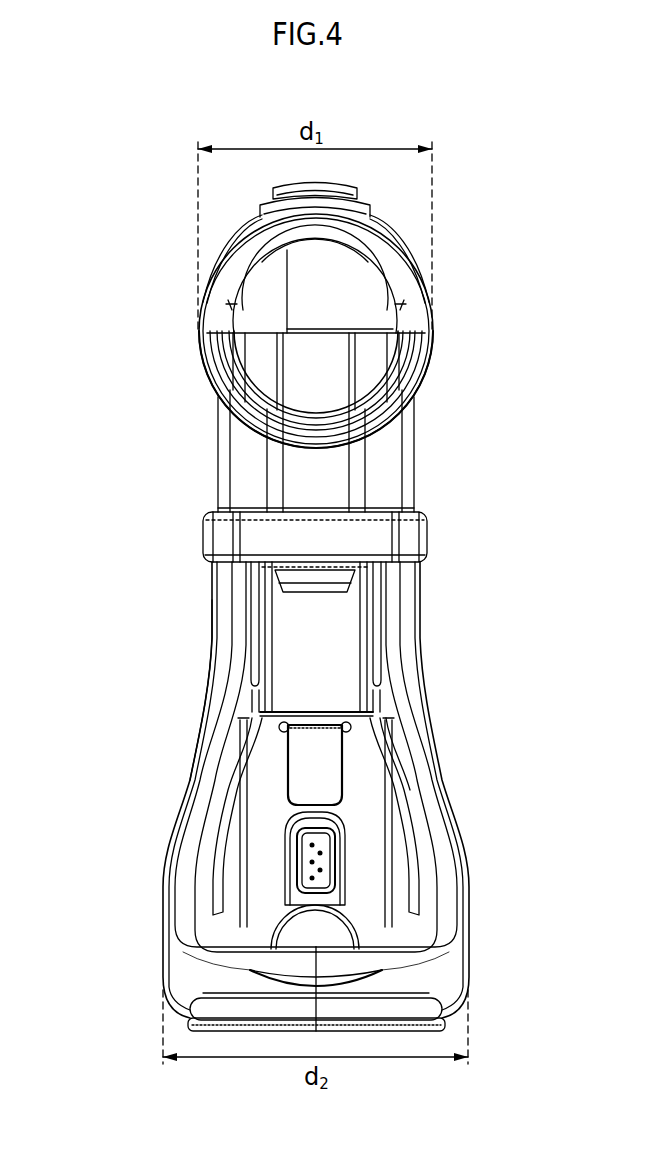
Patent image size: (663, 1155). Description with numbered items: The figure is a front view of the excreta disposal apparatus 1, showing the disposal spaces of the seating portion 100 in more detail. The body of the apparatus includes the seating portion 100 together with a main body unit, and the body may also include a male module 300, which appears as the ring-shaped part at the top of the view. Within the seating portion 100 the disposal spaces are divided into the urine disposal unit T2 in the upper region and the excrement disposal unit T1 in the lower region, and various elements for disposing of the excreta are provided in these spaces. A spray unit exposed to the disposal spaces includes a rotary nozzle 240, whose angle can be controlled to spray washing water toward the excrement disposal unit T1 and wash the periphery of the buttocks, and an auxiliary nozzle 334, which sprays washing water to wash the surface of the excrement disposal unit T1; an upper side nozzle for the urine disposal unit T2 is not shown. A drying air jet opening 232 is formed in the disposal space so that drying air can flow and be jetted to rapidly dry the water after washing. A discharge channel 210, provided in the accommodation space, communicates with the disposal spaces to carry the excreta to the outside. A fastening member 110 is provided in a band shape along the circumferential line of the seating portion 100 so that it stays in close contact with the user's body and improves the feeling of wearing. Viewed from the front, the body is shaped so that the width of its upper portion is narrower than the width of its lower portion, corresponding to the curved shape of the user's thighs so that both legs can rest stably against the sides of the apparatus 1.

The excreta disposal apparatus 1 is at (138, 300).
The seating portion 100 is at (208, 618).
The fastening member 110 is at (222, 717).
The discharge channel 210 is at (313, 935).
The drying air jet opening 232 is at (314, 750).
The rotary nozzle 240 is at (325, 862).
The male module 300 is at (440, 316).
The auxiliary nozzle 334 is at (342, 583).
The excrement disposal unit T1 is at (360, 808).
The urine disposal unit T2 is at (318, 323).